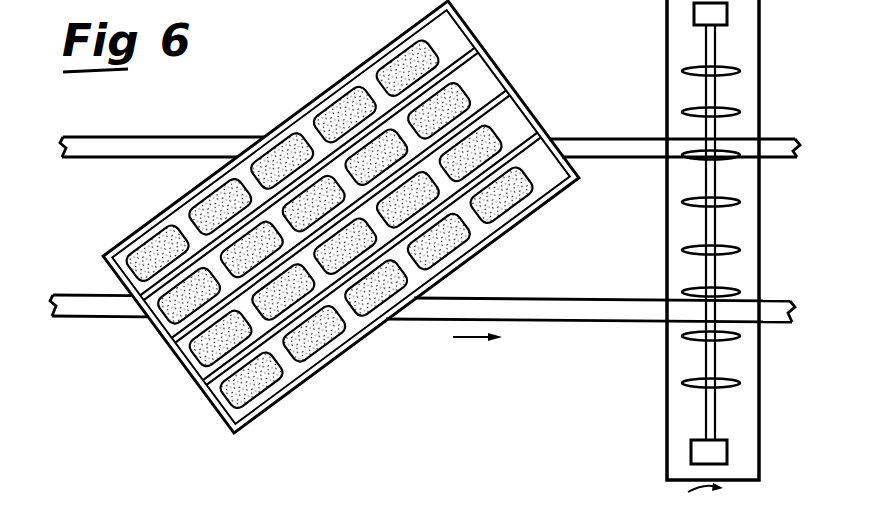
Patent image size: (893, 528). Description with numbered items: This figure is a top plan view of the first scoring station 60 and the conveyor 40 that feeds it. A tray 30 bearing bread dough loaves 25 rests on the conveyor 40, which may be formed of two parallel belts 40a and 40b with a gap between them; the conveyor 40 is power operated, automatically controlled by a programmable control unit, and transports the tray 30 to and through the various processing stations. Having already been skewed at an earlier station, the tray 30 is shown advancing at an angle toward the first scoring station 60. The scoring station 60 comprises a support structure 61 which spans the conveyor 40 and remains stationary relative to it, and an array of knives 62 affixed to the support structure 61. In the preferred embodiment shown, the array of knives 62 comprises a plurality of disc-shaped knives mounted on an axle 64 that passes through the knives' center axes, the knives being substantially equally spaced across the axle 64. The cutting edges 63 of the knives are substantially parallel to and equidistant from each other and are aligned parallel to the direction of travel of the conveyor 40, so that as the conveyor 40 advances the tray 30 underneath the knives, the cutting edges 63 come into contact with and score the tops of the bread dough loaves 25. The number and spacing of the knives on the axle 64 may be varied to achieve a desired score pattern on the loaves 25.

The loaves 25 is at (391, 66).
The tray 30 is at (130, 237).
The conveyor 40 is at (88, 112).
The belt 40a is at (135, 137).
The belt 40b is at (93, 319).
The first scoring station 60 is at (572, 55).
The support structure 61 is at (694, 21).
The array of knives 62 is at (782, 195).
The cutting edges 63 is at (697, 202).
The axle 64 is at (703, 278).